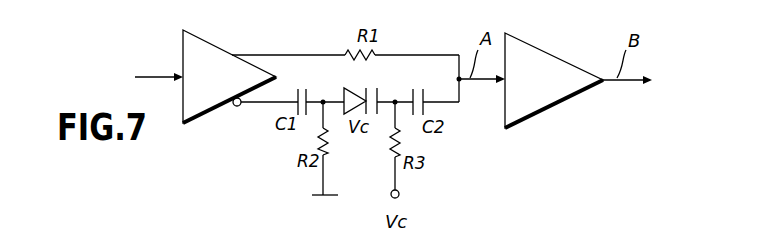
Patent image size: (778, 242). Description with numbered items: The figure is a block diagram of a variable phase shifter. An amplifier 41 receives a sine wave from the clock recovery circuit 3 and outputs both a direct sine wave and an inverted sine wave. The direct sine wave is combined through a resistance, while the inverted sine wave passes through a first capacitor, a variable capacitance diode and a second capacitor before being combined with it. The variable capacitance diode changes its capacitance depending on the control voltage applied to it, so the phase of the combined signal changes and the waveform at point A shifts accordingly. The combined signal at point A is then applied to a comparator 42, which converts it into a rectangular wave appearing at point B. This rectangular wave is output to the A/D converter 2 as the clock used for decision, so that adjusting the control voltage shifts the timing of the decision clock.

The amplifier 41 is at (213, 42).
The comparator 42 is at (550, 50).
The clock recovery circuit 3 is at (118, 80).
The A/D converter 2 is at (650, 81).